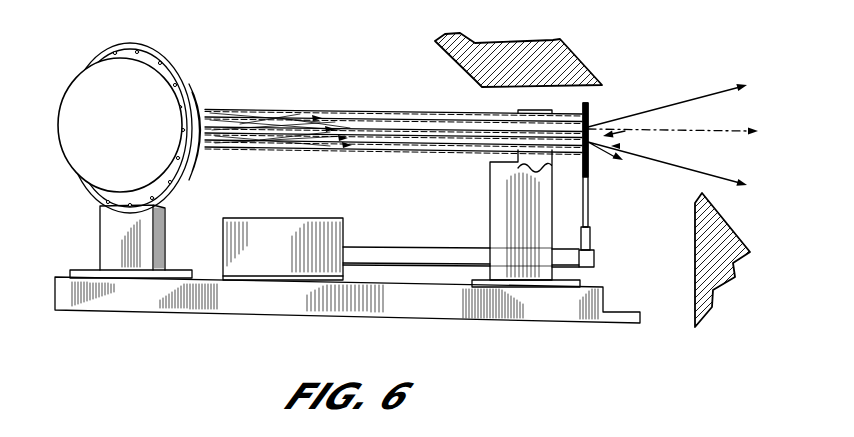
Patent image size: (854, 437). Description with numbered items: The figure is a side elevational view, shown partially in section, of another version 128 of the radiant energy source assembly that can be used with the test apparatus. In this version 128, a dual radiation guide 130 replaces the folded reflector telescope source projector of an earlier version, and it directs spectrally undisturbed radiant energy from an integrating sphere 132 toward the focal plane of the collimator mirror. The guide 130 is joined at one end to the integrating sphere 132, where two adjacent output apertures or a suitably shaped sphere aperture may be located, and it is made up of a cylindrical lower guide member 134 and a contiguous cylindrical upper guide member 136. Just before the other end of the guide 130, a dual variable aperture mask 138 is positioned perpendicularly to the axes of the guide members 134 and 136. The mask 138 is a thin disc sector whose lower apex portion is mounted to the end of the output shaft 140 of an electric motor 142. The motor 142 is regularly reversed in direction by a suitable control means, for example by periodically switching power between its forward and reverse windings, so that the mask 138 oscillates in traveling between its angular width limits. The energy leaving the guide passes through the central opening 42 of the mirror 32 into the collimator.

The radiant energy source assembly version 128 is at (130, 32).
The integrating sphere 132 is at (181, 68).
The dual radiation guide 130 is at (256, 109).
The upper guide member 136 is at (328, 117).
The lower guide member 134 is at (363, 151).
The dual variable aperture mask 138 is at (588, 207).
The output shaft 140 is at (385, 246).
The electric motor 142 is at (277, 217).
The mirror 32 is at (590, 70).
The central opening 42 is at (688, 183).